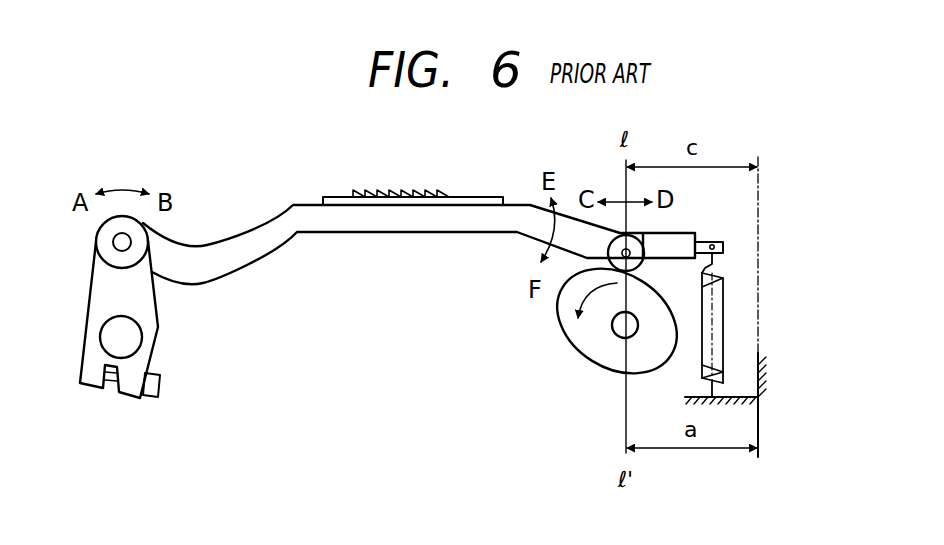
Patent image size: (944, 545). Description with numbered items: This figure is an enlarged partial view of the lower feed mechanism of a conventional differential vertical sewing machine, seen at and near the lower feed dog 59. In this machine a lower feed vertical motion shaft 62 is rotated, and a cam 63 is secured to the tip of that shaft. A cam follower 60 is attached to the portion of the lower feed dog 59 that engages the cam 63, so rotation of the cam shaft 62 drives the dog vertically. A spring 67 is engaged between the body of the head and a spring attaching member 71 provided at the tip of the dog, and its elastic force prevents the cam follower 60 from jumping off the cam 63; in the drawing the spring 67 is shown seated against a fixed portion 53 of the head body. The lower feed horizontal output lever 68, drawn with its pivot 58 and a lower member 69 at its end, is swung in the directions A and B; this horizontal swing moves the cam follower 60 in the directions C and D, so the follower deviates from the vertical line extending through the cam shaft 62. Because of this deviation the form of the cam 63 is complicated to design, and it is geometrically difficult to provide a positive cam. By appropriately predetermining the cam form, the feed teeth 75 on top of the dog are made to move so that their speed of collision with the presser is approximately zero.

The frame (fixed support) 53 is at (770, 397).
The pin 58 is at (98, 333).
The lower feed dog 59 is at (266, 268).
The cam follower 60 is at (644, 250).
The lower feed vertical motion shaft 62 is at (617, 335).
The cam 63 is at (583, 355).
The spring 67 is at (725, 302).
The lower feed horizontal output lever 68 is at (160, 320).
The stopper 69 is at (160, 387).
The spring attaching member 71 is at (725, 247).
The feed teeth 75 is at (472, 196).